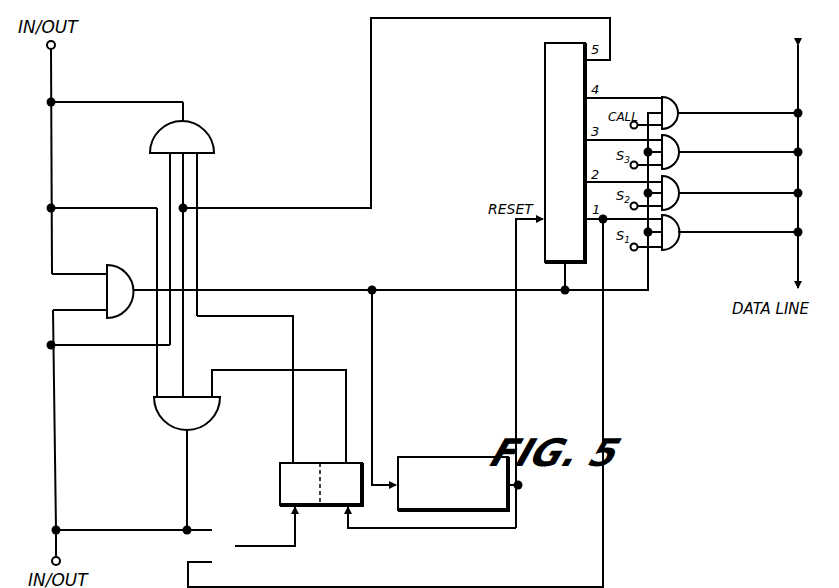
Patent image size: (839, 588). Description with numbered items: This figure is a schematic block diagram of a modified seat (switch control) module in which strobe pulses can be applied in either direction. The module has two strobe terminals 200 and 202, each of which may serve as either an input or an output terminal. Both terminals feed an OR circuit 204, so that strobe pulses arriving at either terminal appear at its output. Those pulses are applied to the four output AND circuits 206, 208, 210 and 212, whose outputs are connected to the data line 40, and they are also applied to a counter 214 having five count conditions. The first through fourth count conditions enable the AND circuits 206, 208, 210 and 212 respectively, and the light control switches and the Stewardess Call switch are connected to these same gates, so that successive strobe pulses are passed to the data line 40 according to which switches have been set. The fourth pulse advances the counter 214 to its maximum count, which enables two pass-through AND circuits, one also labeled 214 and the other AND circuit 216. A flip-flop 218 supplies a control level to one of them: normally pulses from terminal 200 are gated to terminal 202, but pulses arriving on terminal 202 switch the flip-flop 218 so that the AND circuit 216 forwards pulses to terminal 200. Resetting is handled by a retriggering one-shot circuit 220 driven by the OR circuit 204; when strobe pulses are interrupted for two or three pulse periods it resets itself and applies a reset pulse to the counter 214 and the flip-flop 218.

The strobe terminal 200 is at (56, 45).
The strobe terminal 202 is at (51, 558).
The OR circuit 204 is at (118, 263).
The AND circuit 206 is at (676, 252).
The AND circuit 208 is at (680, 216).
The AND circuit 210 is at (676, 136).
The AND circuit 212 is at (668, 96).
The counter 214 is at (545, 78).
The AND circuit 216 is at (205, 128).
The flip-flop 218 is at (278, 485).
The retriggering one-shot circuit 220 is at (443, 455).
The data line 40 is at (796, 60).